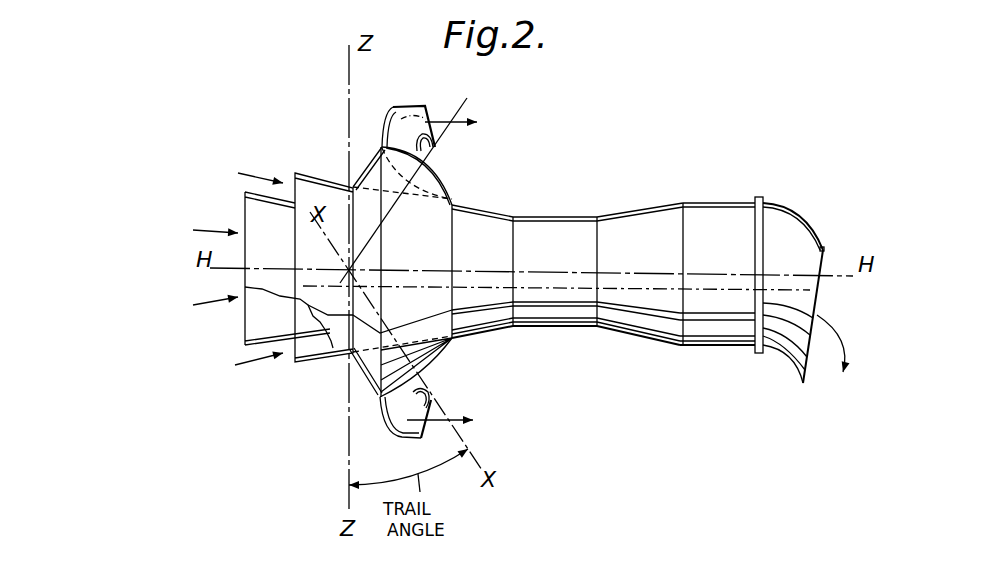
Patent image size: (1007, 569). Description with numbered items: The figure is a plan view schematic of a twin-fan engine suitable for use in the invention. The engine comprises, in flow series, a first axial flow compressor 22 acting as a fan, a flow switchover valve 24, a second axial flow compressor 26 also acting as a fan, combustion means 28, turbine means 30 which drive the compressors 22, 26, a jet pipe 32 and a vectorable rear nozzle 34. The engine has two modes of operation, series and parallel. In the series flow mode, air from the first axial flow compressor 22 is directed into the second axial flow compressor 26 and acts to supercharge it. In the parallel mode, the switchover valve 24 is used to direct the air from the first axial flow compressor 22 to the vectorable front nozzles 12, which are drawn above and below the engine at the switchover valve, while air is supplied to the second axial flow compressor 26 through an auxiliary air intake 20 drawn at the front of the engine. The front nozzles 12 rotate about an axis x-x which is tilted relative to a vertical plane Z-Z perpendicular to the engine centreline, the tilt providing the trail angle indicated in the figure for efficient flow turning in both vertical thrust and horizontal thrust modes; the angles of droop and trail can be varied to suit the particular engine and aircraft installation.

The vectorable front nozzle 12 is at (407, 107).
The auxiliary air intake 20 is at (317, 352).
The first axial flow compressor 22 is at (253, 323).
The flow switchover valve 24 is at (453, 333).
The second axial flow compressor 26 is at (482, 207).
The combustion means 28 is at (557, 213).
The turbine means 30 is at (640, 212).
The jet pipe 32 is at (717, 202).
The vectorable rear nozzle 34 is at (787, 213).